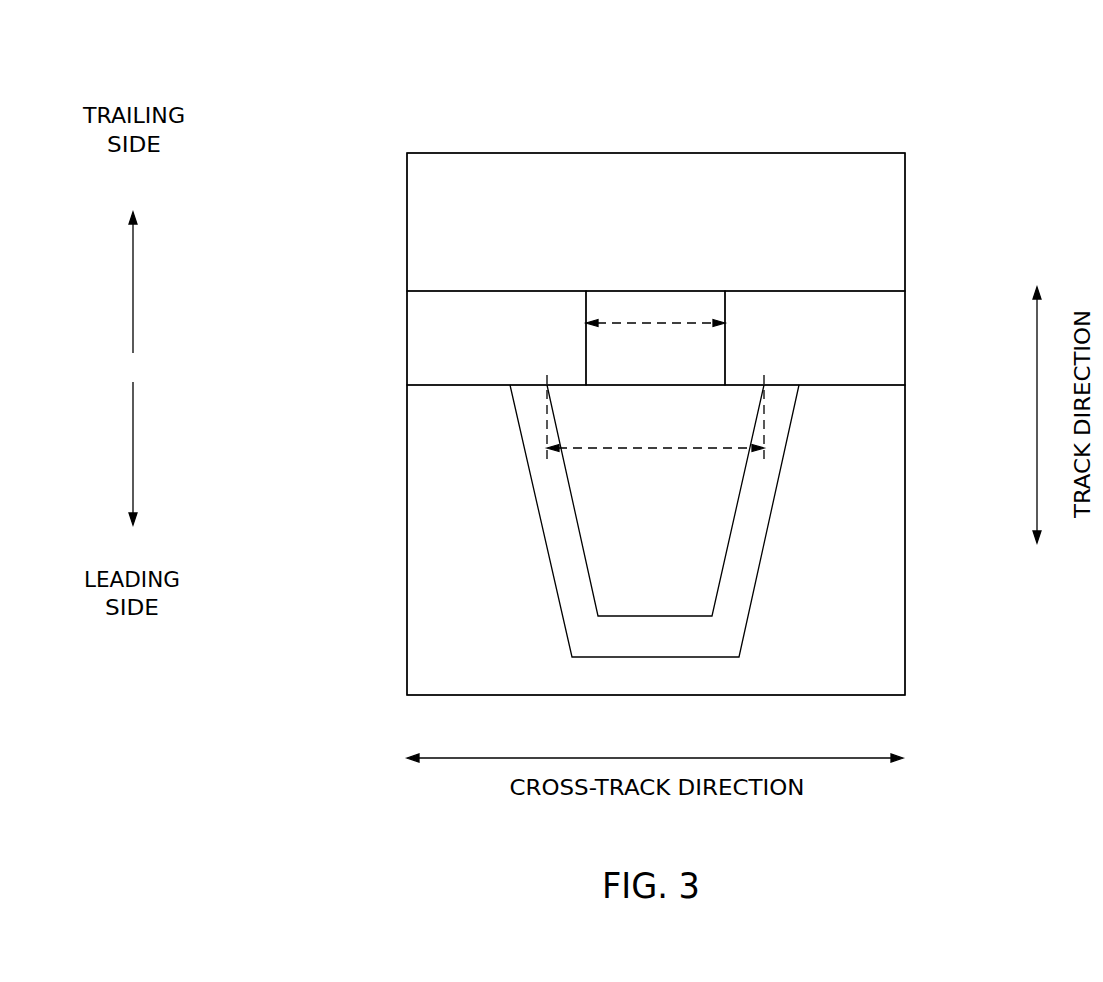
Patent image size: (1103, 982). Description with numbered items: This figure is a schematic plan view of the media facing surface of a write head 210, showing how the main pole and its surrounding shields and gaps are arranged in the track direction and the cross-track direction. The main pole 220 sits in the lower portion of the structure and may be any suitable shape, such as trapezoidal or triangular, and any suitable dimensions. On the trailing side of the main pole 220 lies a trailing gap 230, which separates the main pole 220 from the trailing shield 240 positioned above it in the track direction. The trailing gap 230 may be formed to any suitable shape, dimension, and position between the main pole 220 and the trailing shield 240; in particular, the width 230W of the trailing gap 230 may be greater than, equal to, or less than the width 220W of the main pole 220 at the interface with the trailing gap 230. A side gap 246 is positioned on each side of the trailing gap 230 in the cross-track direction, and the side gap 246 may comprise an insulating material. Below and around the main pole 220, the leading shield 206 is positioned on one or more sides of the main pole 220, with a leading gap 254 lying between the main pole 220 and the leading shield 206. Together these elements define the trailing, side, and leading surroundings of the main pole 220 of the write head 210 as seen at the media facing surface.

The write head 210 is at (361, 61).
The trailing shield 240 is at (781, 234).
The side gap 246 is at (476, 350).
The trailing gap 230 is at (639, 360).
The width of the trailing gap 230W is at (647, 322).
The leading shield 206 is at (814, 555).
The leading gap 254 is at (621, 647).
The main pole 220 is at (638, 512).
The width of the main pole 220W is at (627, 447).